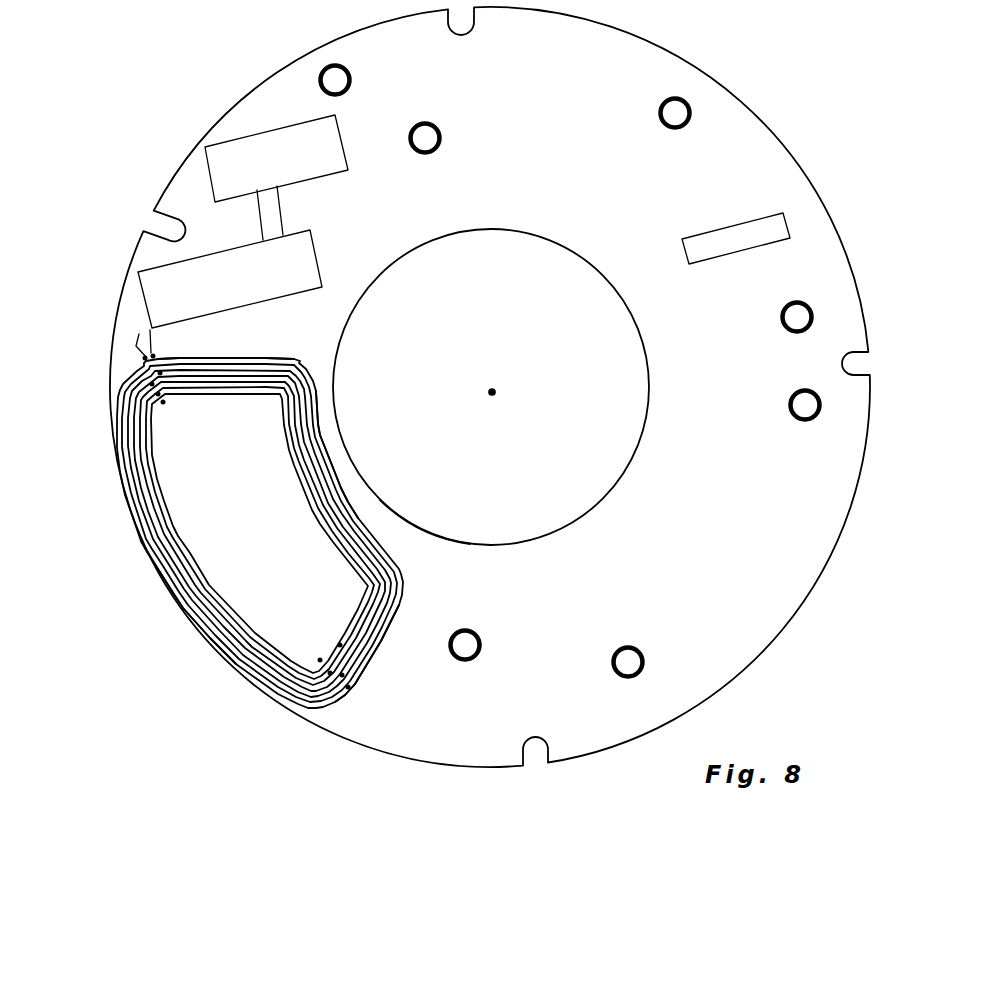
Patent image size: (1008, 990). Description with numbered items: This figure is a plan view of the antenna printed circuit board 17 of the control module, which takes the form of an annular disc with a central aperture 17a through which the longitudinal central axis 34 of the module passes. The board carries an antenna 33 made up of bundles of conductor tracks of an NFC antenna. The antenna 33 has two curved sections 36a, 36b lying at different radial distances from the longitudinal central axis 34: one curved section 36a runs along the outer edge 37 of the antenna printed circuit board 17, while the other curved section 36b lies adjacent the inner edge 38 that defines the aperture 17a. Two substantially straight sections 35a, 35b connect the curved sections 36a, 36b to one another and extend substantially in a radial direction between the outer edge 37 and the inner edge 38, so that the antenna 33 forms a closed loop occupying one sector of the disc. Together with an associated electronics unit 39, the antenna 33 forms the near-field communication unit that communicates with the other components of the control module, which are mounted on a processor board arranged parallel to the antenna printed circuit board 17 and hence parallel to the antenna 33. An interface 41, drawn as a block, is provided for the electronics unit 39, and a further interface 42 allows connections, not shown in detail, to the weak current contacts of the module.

The antenna printed circuit board 17 is at (777, 183).
The aperture 17a is at (592, 441).
The antenna 33 is at (357, 713).
The longitudinal central axis 34 is at (494, 390).
The substantially straight section 35a is at (247, 362).
The substantially straight section 35b is at (392, 623).
The curved section 36a is at (217, 623).
The curved section 36b is at (337, 482).
The outer edge 37 is at (110, 360).
The inner edge 38 is at (438, 535).
The electronics unit 39 is at (163, 293).
The interface 41 is at (318, 155).
The further interface 42 is at (773, 230).